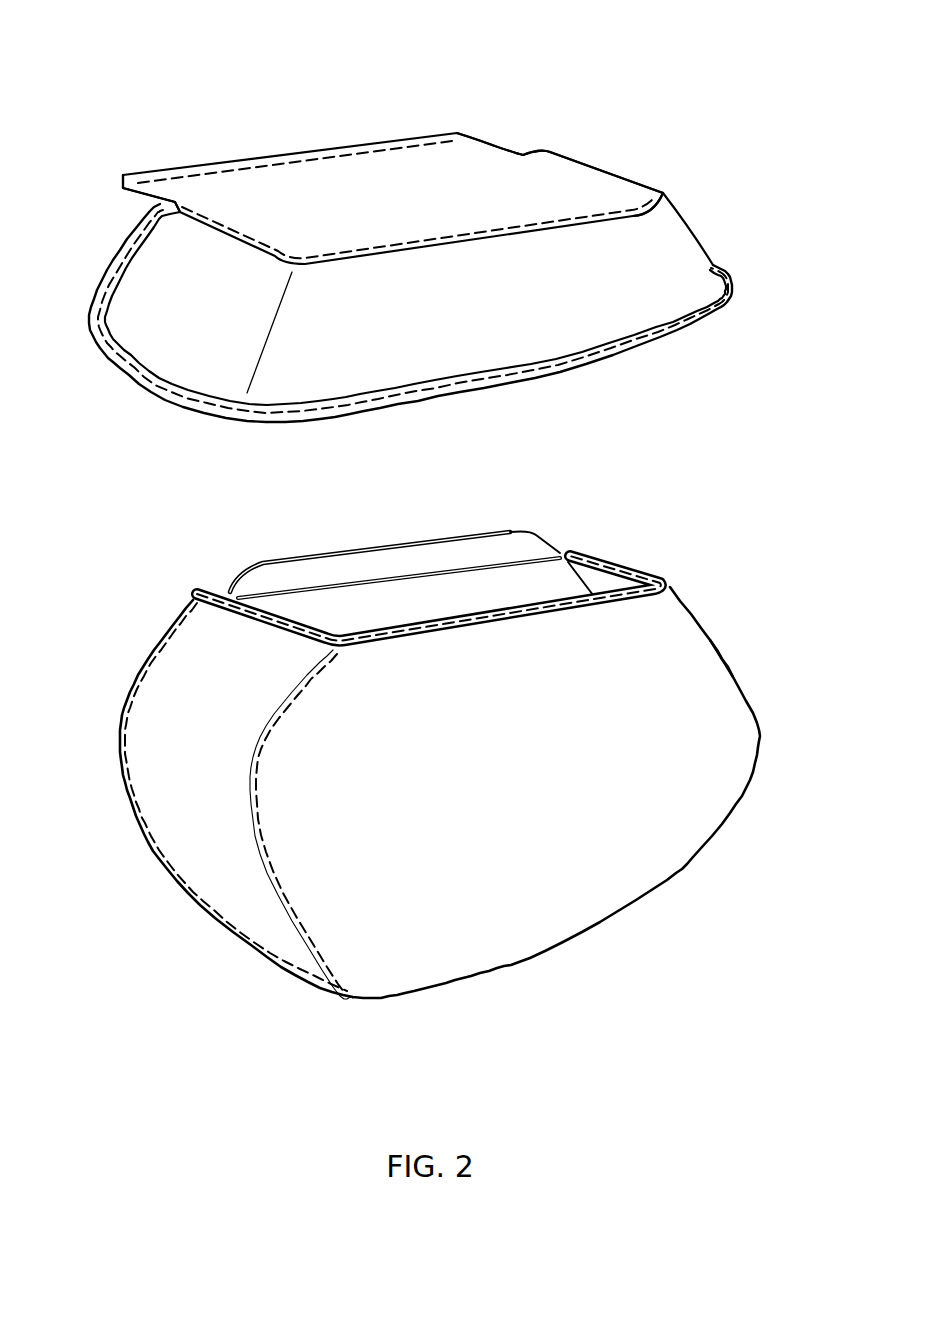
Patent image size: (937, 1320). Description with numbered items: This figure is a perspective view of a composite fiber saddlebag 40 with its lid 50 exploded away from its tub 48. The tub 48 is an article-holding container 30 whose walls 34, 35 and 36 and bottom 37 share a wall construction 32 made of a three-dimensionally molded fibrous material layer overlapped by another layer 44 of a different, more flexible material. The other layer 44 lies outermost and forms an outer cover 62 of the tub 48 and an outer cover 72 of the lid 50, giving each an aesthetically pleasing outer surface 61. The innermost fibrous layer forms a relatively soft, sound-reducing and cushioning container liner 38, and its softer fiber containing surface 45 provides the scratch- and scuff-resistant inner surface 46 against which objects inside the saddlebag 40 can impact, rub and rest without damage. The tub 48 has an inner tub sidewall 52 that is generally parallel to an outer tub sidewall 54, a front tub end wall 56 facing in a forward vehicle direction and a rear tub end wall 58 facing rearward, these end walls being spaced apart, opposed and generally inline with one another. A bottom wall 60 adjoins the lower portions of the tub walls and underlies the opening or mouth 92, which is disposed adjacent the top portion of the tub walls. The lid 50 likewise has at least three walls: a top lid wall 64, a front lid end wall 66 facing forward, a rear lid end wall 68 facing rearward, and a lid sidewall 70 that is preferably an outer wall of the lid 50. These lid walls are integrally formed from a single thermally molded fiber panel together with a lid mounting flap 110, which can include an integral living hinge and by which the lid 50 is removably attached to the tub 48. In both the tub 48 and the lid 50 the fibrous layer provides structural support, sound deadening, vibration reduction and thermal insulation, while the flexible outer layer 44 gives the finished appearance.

The container 30 is at (482, 768).
The wall construction 32 is at (733, 870).
The wall 34 is at (257, 923).
The wall 35 is at (690, 612).
The wall 36 is at (572, 900).
The bottom 37 is at (538, 943).
The container liner 38 is at (517, 588).
The saddlebag 40 is at (394, 215).
The other layer 44 is at (690, 225).
The fiber containing surface 45 is at (467, 597).
The inner surface 46 is at (433, 600).
The tub 48 is at (297, 993).
The lid 50 is at (600, 130).
The inner tub sidewall 52 is at (365, 597).
The outer tub sidewall 54 is at (658, 860).
The front tub end wall 56 is at (190, 860).
The rear tub end wall 58 is at (712, 632).
The bottom wall 60 is at (485, 976).
The outer surface 61 is at (722, 707).
The outer cover 62 is at (662, 787).
The top lid wall 64 is at (440, 165).
The front lid end wall 66 is at (150, 305).
The rear lid end wall 68 is at (675, 193).
The lid sidewall 70 is at (665, 283).
The outer cover 72 is at (508, 170).
The mouth 92 is at (393, 588).
The lid mounting flap 110 is at (147, 190).